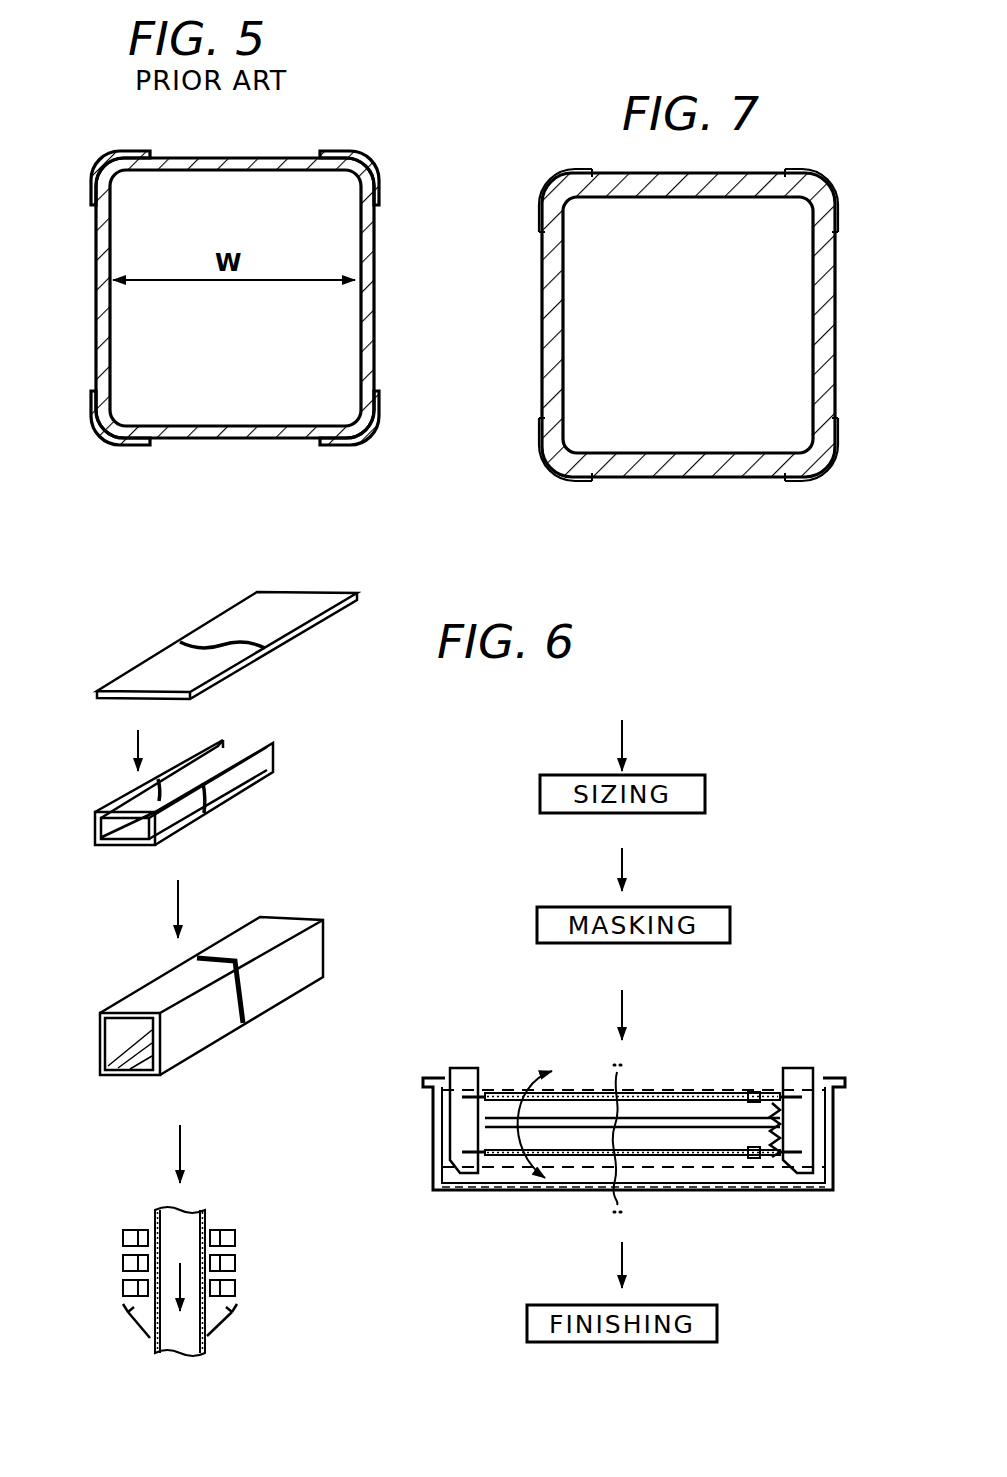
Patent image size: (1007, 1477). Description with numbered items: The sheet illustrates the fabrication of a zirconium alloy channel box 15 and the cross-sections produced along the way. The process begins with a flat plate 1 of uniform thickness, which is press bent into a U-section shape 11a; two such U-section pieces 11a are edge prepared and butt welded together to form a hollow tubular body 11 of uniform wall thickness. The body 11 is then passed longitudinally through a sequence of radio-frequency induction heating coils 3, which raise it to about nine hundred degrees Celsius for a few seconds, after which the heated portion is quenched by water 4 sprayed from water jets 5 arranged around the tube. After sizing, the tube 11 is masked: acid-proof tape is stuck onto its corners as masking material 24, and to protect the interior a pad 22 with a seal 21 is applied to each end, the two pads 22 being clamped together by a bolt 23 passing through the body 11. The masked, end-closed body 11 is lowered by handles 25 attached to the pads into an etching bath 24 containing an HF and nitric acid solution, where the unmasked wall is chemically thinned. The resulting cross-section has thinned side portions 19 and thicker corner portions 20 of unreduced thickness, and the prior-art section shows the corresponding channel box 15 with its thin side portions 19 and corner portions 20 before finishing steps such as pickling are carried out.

In FIG. 6, the flat plate 1 is at (138, 677).
In FIG. 6, the radio-frequency induction heating coils 3 is at (235, 1235).
In FIG. 6, the water 4 is at (147, 1332).
In FIG. 6, the water jets 5 is at (232, 1310).
In FIG. 7, the hollow tubular body 11 is at (835, 355).
In FIG. 6, the hollow tubular body 11 is at (313, 980).
In FIG. 6, the U-section shape 11a is at (120, 845).
In FIG. 5, the channel box 15 is at (92, 412).
In FIG. 5, the thin side portions 19 is at (293, 158).
In FIG. 5, the thicker corner portions 20 is at (343, 158).
In FIG. 6, the seal 21 is at (488, 1097).
In FIG. 6, the pad 22 is at (753, 1152).
In FIG. 6, the bolt 23 is at (790, 1130).
In FIG. 7, the etching bath 24 is at (840, 207).
In FIG. 6, the etching bath 24 is at (817, 1173).
In FIG. 6, the handles 25 is at (463, 1072).